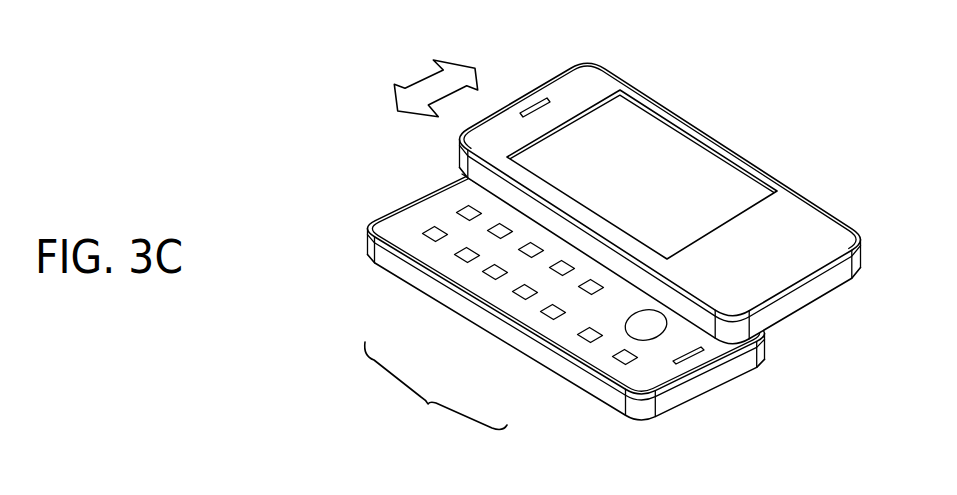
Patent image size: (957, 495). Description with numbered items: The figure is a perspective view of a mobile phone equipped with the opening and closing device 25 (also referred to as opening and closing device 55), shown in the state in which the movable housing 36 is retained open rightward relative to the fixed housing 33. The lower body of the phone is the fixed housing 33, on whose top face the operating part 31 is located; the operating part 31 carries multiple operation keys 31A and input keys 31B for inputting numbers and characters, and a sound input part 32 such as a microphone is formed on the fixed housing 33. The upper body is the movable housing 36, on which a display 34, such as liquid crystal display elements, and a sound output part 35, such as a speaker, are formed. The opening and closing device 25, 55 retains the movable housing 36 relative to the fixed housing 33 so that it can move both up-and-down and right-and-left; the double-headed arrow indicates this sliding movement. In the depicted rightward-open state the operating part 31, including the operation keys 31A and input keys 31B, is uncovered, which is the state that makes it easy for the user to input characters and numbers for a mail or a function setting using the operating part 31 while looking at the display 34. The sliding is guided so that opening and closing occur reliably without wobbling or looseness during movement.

The opening and closing device 25 is at (384, 188).
The opening and closing device 55 is at (477, 190).
The operating part 31 is at (436, 389).
The operation keys 31A is at (524, 294).
The input keys 31B is at (618, 362).
The sound input part 32 is at (693, 355).
The fixed housing 33 is at (383, 257).
The display 34 is at (675, 150).
The sound output part 35 is at (602, 68).
The movable housing 36 is at (805, 225).